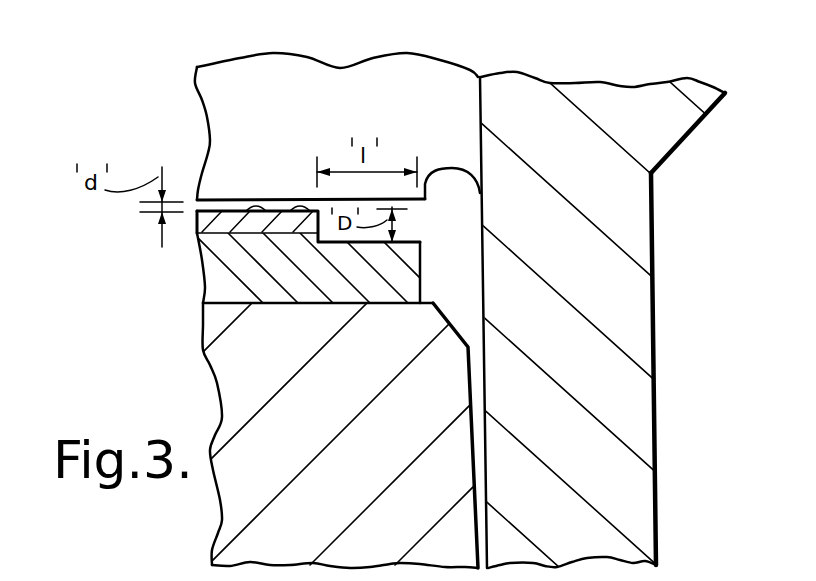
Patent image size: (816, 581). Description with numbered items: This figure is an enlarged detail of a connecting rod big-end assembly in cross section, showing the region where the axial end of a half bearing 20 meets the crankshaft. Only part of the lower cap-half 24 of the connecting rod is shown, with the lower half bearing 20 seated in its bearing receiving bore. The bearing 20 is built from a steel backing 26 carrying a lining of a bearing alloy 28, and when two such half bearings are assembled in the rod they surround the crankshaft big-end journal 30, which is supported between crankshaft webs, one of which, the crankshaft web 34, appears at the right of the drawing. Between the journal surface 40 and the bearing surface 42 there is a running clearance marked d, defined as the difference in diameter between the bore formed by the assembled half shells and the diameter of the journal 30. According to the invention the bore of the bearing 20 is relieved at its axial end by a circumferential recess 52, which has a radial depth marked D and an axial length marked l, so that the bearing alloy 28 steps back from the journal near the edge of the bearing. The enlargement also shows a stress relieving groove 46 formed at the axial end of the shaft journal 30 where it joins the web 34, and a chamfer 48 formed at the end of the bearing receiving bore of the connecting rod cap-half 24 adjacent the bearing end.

The bearing 20 is at (190, 290).
The lower cap-half 24 is at (227, 378).
The steel backing 26 is at (237, 296).
The bearing alloy 28 is at (197, 227).
The crankshaft big-end journal 30 is at (328, 117).
The crankshaft web 34 is at (630, 335).
The journal surface 40 is at (233, 200).
The bearing surface 42 is at (307, 212).
The stress relieving groove 46 is at (670, 160).
The chamfer 48 is at (483, 320).
The circumferential recess 52 is at (413, 232).